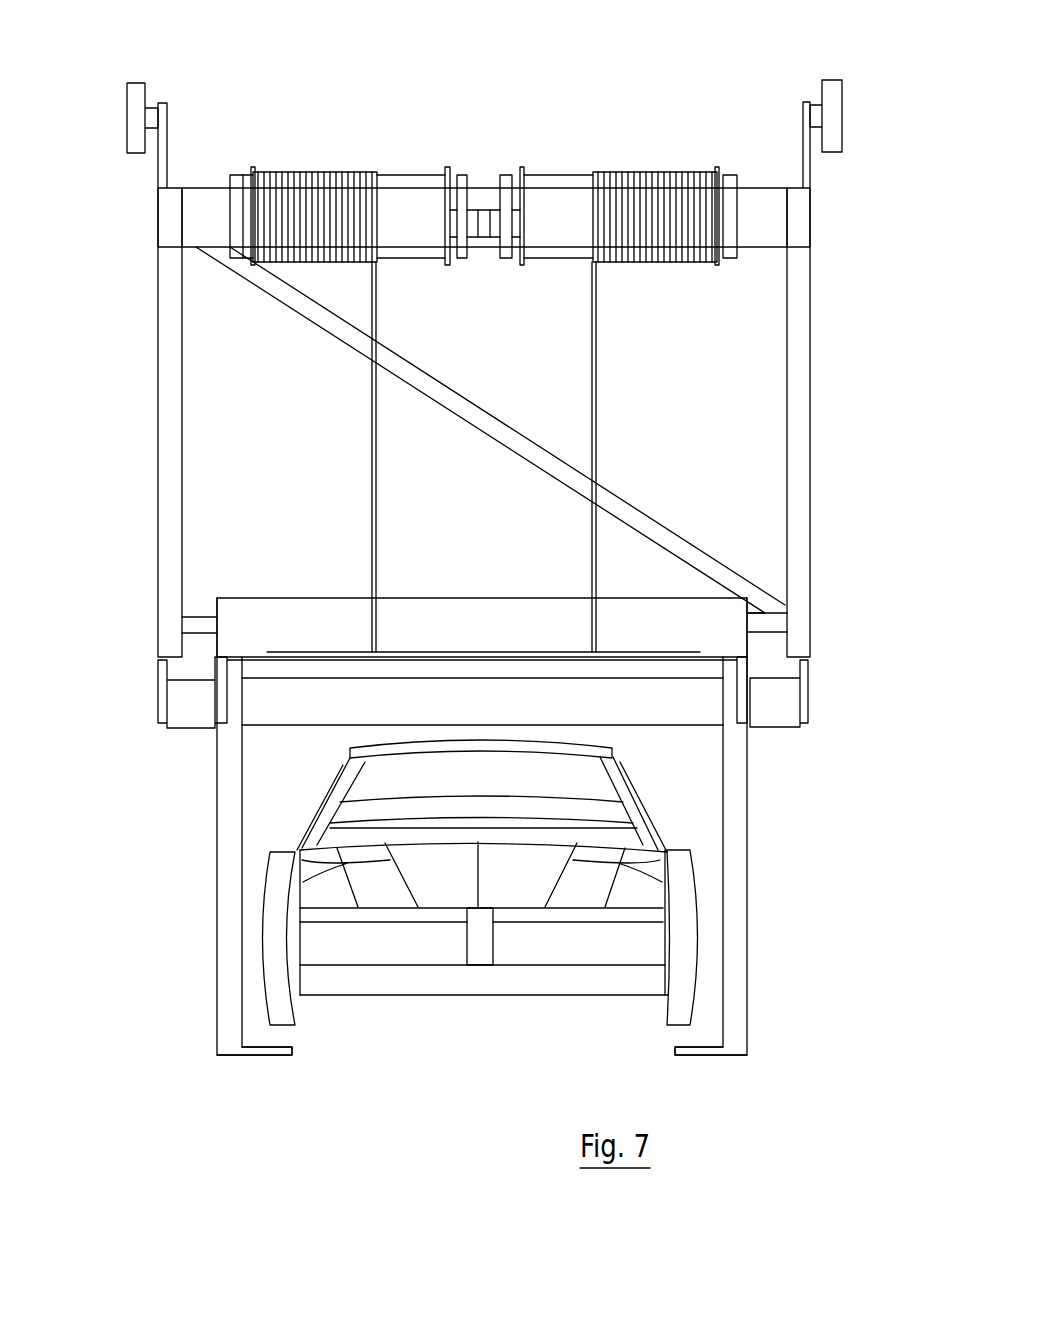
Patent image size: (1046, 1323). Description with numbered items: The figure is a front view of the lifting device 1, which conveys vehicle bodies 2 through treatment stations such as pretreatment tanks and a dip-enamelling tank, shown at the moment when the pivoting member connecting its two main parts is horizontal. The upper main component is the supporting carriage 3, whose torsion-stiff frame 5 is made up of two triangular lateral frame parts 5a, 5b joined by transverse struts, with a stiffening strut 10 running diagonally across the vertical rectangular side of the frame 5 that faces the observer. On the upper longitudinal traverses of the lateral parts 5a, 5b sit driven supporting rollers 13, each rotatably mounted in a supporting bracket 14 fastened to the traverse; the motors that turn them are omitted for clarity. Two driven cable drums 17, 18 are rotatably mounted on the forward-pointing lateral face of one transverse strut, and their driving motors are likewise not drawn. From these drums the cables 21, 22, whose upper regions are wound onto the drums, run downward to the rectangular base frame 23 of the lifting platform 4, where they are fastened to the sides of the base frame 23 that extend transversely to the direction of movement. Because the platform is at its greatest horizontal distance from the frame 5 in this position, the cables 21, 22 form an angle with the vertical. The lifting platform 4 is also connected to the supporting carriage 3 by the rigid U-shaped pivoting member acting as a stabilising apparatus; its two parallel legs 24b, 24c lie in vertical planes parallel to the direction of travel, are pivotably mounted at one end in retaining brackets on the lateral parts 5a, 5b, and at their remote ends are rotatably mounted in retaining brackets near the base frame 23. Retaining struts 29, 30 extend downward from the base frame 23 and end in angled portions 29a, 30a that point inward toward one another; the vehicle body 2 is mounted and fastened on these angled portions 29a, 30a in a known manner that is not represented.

The lifting device 1 is at (154, 786).
The vehicle body 2 is at (528, 950).
The supporting carriage 3 is at (613, 144).
The lifting platform 4 is at (740, 757).
The frame 5 is at (203, 222).
The lateral frame part 5a is at (167, 443).
The lateral frame part 5b is at (803, 440).
The stiffening strut 10 is at (457, 408).
The supporting roller 13 is at (142, 92).
The supporting bracket 14 is at (166, 142).
The cable drum 17 is at (308, 197).
The cable drum 18 is at (670, 187).
The cable 21 is at (373, 445).
The cable 22 is at (596, 440).
The base frame 23 is at (473, 617).
The leg of pivoting member 24b is at (175, 707).
The leg of pivoting member 24c is at (540, 687).
The retaining strut 29 is at (223, 923).
The angled portion 29a is at (263, 1046).
The retaining strut 30 is at (737, 985).
The angled portion 30a is at (711, 1092).